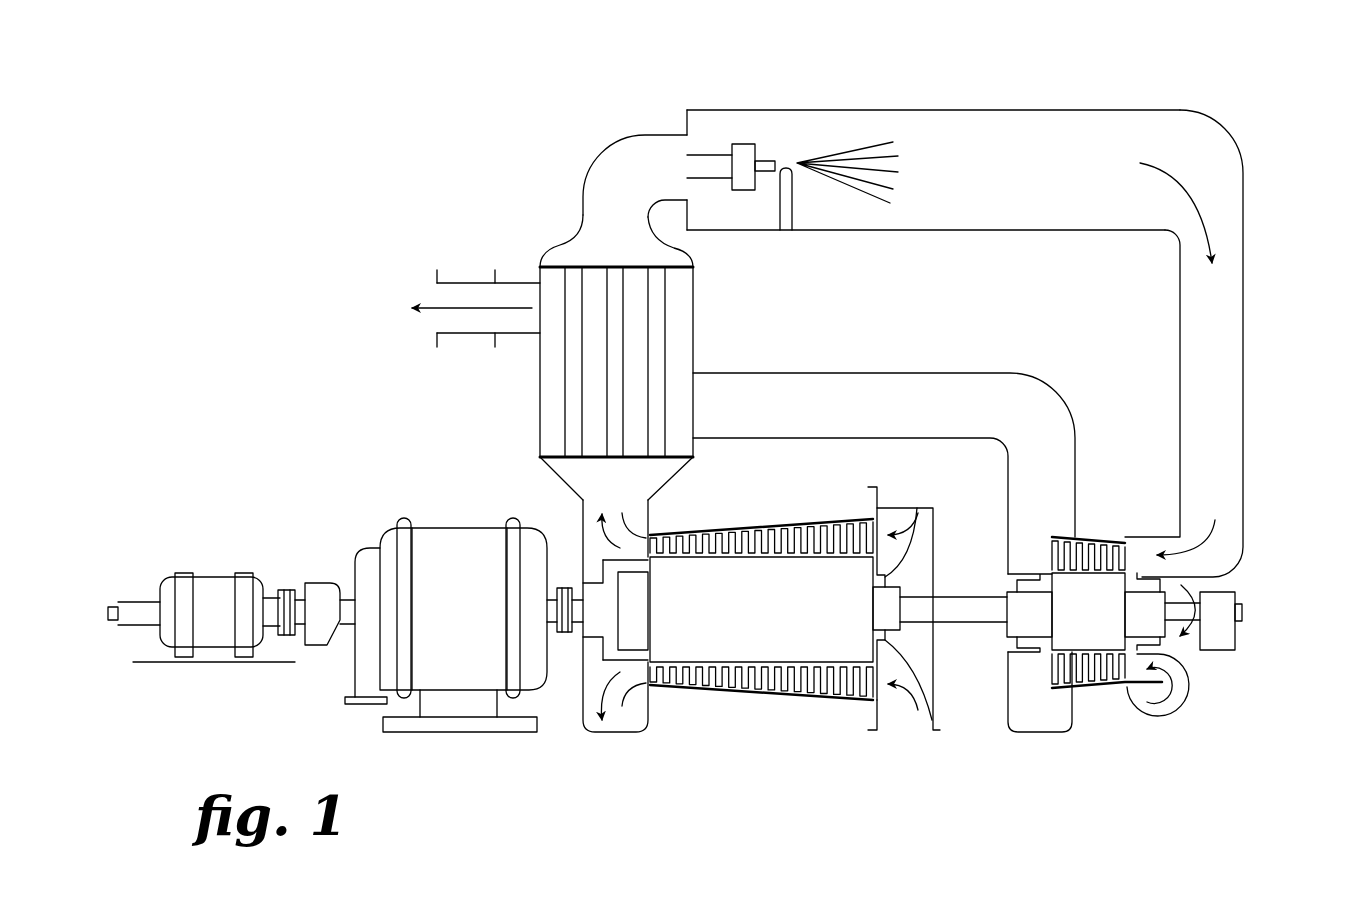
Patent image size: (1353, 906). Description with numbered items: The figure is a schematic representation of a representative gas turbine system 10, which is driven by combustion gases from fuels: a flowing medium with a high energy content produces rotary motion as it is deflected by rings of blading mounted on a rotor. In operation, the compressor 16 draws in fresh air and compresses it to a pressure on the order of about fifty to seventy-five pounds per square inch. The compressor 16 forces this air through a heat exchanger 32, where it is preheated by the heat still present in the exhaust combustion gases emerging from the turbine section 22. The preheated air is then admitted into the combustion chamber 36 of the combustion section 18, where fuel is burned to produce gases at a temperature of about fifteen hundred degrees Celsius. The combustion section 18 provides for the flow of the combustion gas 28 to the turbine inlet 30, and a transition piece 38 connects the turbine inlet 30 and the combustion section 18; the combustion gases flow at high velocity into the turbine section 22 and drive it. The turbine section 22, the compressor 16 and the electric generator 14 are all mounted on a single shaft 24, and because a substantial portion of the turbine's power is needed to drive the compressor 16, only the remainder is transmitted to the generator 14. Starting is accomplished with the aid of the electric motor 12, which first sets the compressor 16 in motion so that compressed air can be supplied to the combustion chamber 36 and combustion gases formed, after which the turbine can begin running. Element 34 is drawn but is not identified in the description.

The gas turbine system 10 is at (458, 176).
The electric motor 12 is at (212, 577).
The electric generator 14 is at (462, 528).
The compressor 16 is at (724, 704).
The combustion section 18 is at (818, 102).
The turbine section 22 is at (1098, 692).
The shaft 24 is at (968, 597).
The combustion gas 28 is at (868, 150).
The turbine inlet 30 is at (1170, 645).
The heat exchanger 32 is at (699, 297).
The igniter 34 is at (797, 198).
The combustion chamber 36 is at (994, 208).
The transition piece 38 is at (1243, 272).